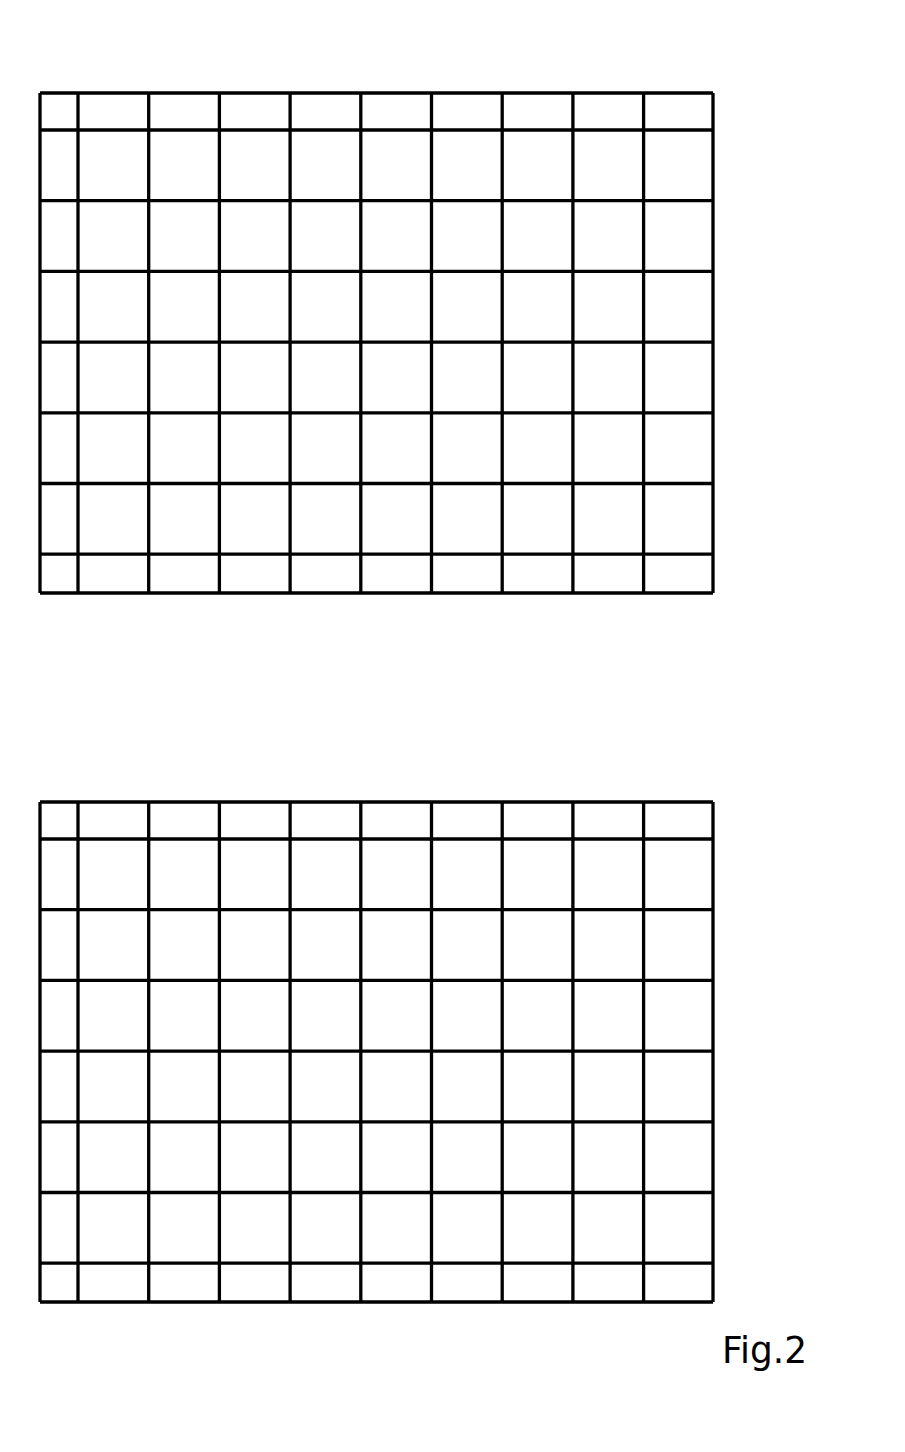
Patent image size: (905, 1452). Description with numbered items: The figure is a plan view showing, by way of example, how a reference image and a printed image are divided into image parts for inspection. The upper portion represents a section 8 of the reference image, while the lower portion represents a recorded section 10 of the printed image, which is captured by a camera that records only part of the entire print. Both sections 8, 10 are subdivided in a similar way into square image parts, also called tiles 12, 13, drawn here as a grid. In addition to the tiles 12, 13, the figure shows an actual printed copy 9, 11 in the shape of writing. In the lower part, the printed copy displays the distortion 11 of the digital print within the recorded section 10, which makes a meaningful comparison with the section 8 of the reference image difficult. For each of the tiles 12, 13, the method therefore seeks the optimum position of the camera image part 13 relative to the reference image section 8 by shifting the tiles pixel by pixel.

The section of the reference image 8 is at (713, 93).
The printed copy 9 is at (693, 212).
The image parts/tiles 12 is at (398, 147).
The section of the printed image 10 is at (713, 802).
The distortion 11 is at (693, 923).
The camera image parts/tiles 13 is at (398, 856).